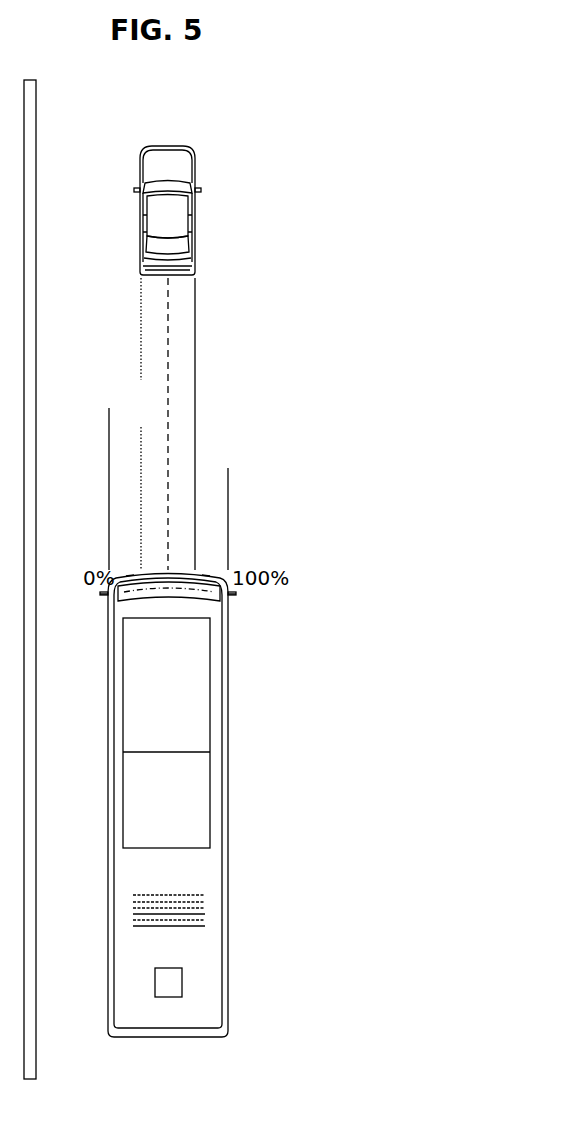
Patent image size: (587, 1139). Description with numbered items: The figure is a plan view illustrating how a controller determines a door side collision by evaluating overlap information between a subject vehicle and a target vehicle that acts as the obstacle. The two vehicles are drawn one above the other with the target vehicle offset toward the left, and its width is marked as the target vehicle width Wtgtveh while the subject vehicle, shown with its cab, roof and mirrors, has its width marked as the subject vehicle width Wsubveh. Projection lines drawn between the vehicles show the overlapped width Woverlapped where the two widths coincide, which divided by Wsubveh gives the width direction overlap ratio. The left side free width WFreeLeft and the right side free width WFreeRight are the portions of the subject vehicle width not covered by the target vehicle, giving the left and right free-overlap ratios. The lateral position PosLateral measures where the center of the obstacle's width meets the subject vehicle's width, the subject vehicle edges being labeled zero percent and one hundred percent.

The target vehicle width Wtgtveh is at (195, 142).
The overlapped width Woverlapped is at (142, 314).
The lateral position PosLateral is at (167, 414).
The left side free width WFreeLeft is at (140, 494).
The right side free width WFreeRight is at (227, 494).
The subject vehicle width Wsubveh is at (227, 1063).